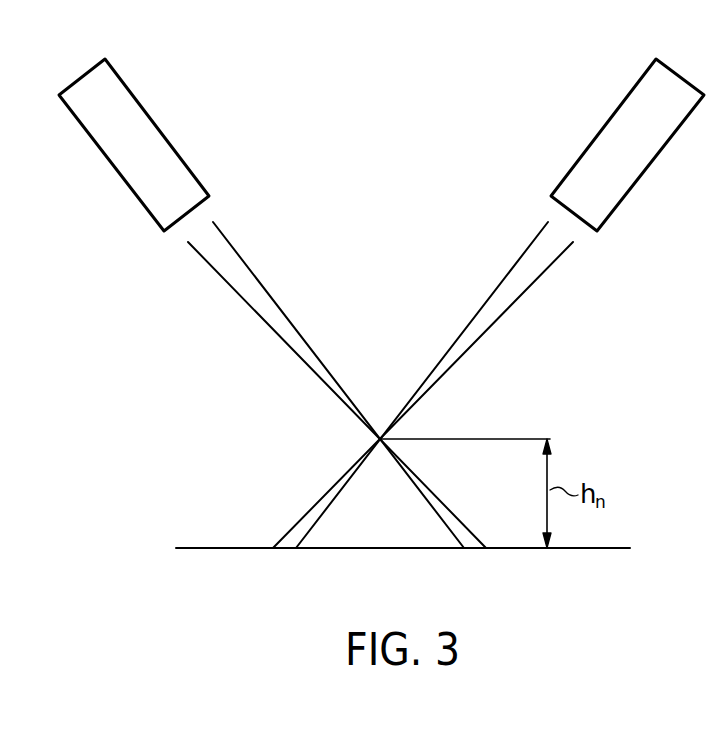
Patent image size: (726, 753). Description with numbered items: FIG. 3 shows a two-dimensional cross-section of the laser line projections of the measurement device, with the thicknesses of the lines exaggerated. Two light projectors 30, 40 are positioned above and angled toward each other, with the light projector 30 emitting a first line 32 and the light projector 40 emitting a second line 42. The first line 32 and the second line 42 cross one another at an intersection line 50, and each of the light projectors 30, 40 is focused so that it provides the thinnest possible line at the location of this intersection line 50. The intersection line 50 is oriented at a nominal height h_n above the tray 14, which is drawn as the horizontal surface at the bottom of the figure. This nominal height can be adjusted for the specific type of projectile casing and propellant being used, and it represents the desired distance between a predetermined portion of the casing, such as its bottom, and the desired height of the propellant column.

The tray 14 is at (202, 548).
The light projector 30 is at (165, 137).
The first line 32 is at (224, 303).
The light projector 40 is at (597, 137).
The second line 42 is at (538, 303).
The intersection line 50 is at (380, 435).